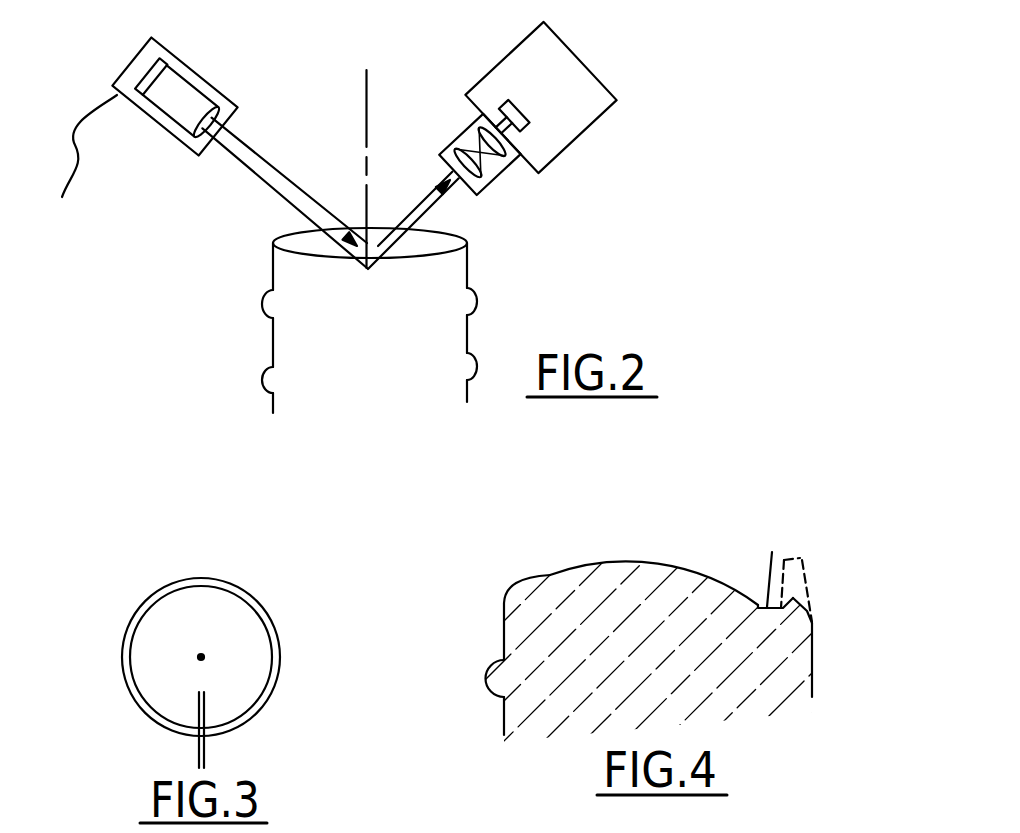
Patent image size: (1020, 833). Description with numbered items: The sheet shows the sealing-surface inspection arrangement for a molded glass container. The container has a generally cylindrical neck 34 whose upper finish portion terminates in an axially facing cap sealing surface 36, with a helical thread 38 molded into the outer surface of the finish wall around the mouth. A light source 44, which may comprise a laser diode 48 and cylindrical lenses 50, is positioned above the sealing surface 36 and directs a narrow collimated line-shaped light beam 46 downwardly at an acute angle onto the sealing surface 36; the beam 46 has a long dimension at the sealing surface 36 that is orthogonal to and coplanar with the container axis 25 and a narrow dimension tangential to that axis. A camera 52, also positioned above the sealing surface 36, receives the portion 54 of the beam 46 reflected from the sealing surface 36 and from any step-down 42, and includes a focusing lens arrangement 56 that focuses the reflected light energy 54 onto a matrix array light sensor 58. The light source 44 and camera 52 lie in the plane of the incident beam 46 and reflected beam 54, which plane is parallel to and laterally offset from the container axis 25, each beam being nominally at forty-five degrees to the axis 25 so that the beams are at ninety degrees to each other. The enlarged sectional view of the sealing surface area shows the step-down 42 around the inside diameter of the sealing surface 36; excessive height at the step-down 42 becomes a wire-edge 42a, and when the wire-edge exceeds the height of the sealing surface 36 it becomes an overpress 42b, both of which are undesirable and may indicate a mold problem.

In FIG. 2, the container axis 25 is at (365, 97).
In FIG. 3, the container axis 25 is at (203, 655).
In FIG. 2, the neck 34 is at (288, 338).
In FIG. 4, the neck 34 is at (532, 700).
In FIG. 2, the cap sealing surface 36 is at (465, 236).
In FIG. 3, the cap sealing surface 36 is at (270, 695).
In FIG. 4, the cap sealing surface 36 is at (625, 547).
In FIG. 2, the helical thread 38 is at (473, 297).
In FIG. 4, the helical thread 38 is at (488, 673).
In FIG. 4, the step-down 42 is at (776, 564).
In FIG. 4, the wire-edge 42a is at (812, 622).
In FIG. 4, the overpress 42b is at (803, 571).
In FIG. 2, the light source 44 is at (205, 52).
In FIG. 2, the light beam 46 is at (262, 182).
In FIG. 3, the light beam 46 is at (205, 744).
In FIG. 2, the laser diode 48 is at (76, 164).
In FIG. 2, the cylindrical lenses 50 is at (220, 106).
In FIG. 2, the camera 52 is at (560, 22).
In FIG. 2, the reflected light beam 54 is at (418, 197).
In FIG. 2, the focusing lens arrangement 56 is at (465, 133).
In FIG. 2, the matrix array light sensor 58 is at (537, 128).